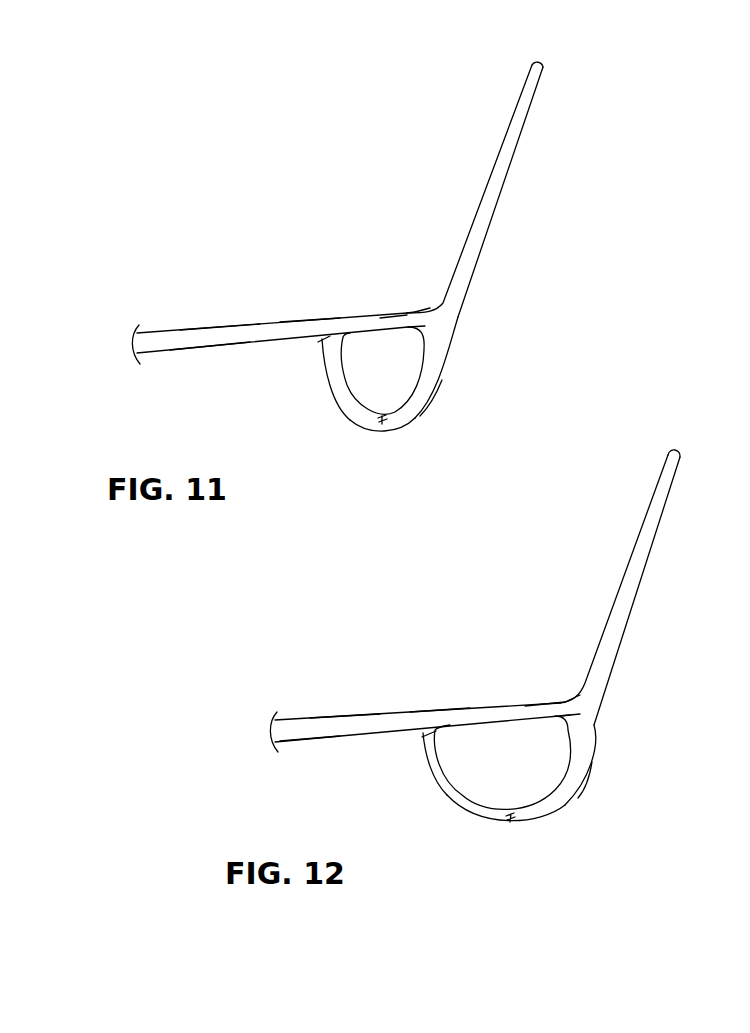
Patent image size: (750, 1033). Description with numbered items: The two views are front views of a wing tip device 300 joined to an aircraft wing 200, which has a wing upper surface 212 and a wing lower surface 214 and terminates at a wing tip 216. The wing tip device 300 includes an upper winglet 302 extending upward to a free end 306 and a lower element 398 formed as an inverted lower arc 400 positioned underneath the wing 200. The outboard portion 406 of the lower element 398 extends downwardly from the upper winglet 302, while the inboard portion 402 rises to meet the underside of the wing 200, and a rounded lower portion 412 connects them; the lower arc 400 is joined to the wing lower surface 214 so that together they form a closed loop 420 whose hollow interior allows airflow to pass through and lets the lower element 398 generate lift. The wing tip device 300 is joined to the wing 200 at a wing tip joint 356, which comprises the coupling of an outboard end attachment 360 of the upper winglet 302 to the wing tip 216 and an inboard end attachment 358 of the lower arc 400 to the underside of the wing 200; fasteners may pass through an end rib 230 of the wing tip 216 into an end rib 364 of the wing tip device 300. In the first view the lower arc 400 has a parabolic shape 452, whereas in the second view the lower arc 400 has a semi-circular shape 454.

In FIG. 11, the wing 200 is at (178, 325).
In FIG. 12, the wing 200 is at (318, 718).
In FIG. 11, the wing upper surface 212 is at (218, 328).
In FIG. 12, the wing upper surface 212 is at (343, 718).
In FIG. 11, the wing lower surface 214 is at (199, 352).
In FIG. 12, the wing lower surface 214 is at (300, 743).
In FIG. 11, the wing tip 216 is at (318, 318).
In FIG. 12, the wing tip 216 is at (445, 708).
In FIG. 11, the end rib 230 is at (407, 327).
In FIG. 12, the end rib 230 is at (553, 717).
In FIG. 11, the wing tip device 300 is at (431, 265).
In FIG. 12, the wing tip device 300 is at (547, 653).
In FIG. 11, the upper winglet 302 is at (508, 175).
In FIG. 12, the upper winglet 302 is at (652, 545).
In FIG. 11, the free end of arm 306 is at (541, 62).
In FIG. 12, the free end of arm 306 is at (676, 457).
In FIG. 11, the wing tip joint 356 is at (408, 327).
In FIG. 12, the wing tip joint 356 is at (557, 715).
In FIG. 11, the inboard end attachment 358 is at (315, 341).
In FIG. 12, the inboard end attachment 358 is at (422, 737).
In FIG. 11, the outboard end attachment 360 is at (410, 326).
In FIG. 12, the outboard end attachment 360 is at (590, 713).
In FIG. 11, the end rib 364 is at (415, 310).
In FIG. 12, the end rib 364 is at (562, 703).
In FIG. 11, the lower element 398 is at (425, 415).
In FIG. 12, the lower element 398 is at (587, 783).
In FIG. 11, the lower arc 400 is at (402, 400).
In FIG. 12, the lower arc 400 is at (537, 801).
In FIG. 11, the inboard portion 402 is at (333, 375).
In FIG. 12, the inboard portion 402 is at (443, 783).
In FIG. 11, the outboard portion 406 is at (452, 352).
In FIG. 12, the outboard portion 406 is at (592, 755).
In FIG. 11, the rounded lower portion 412 is at (382, 425).
In FIG. 12, the rounded lower portion 412 is at (510, 824).
In FIG. 11, the closed loop 420 is at (402, 430).
In FIG. 12, the closed loop 420 is at (543, 818).
In FIG. 11, the parabolic shape 452 is at (340, 413).
In FIG. 12, the semi-circular shape 454 is at (468, 812).